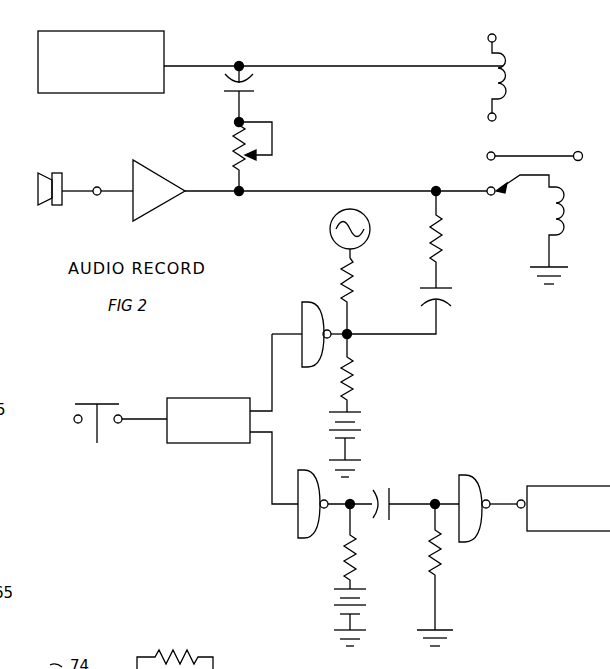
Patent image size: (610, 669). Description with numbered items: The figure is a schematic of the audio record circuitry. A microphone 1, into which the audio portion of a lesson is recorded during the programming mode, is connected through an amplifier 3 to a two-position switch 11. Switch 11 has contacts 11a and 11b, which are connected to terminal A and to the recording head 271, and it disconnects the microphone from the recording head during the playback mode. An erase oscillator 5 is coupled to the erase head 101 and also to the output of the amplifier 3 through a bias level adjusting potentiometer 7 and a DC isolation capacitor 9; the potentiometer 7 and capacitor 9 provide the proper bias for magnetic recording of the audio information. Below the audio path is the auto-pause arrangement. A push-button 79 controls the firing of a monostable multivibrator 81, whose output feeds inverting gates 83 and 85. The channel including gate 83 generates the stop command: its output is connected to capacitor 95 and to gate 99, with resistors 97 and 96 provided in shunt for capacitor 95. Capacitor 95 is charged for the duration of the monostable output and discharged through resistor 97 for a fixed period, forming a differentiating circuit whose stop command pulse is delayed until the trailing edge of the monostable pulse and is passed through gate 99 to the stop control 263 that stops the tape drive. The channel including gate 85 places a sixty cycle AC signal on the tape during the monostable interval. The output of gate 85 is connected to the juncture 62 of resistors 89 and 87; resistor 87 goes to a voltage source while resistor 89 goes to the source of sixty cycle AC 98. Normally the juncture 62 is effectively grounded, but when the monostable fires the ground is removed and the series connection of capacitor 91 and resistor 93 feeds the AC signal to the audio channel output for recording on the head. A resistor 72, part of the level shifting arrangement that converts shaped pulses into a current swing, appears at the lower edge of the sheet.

The microphone 1 is at (85, 180).
The amplifier 3 is at (159, 188).
The erase oscillator 5 is at (110, 61).
The bias level adjusting potentiometer 7 is at (242, 155).
The DC isolation capacitor 9 is at (248, 96).
The two-position switch 11 is at (490, 181).
The switch contact 11a is at (487, 202).
The switch contact 11b is at (535, 147).
The erase head 101 is at (513, 77).
The recording head 271 is at (567, 235).
The resistor 93 is at (424, 239).
The capacitor 91 is at (411, 311).
The source of 60 cycle AC 98 is at (337, 233).
The resistor 89 is at (358, 296).
The juncture 62 is at (351, 343).
The resistor 87 is at (352, 405).
The inverter gate 85 is at (301, 334).
The monostable multivibrator 81 is at (232, 419).
The push-button 79 is at (120, 414).
The inverting gate 83 is at (320, 504).
The resistor 96 is at (341, 573).
The capacitor 95 is at (416, 500).
The resistor 97 is at (426, 573).
The gate 99 is at (488, 498).
The stop control 263 is at (563, 498).
The resistor 72 is at (175, 649).